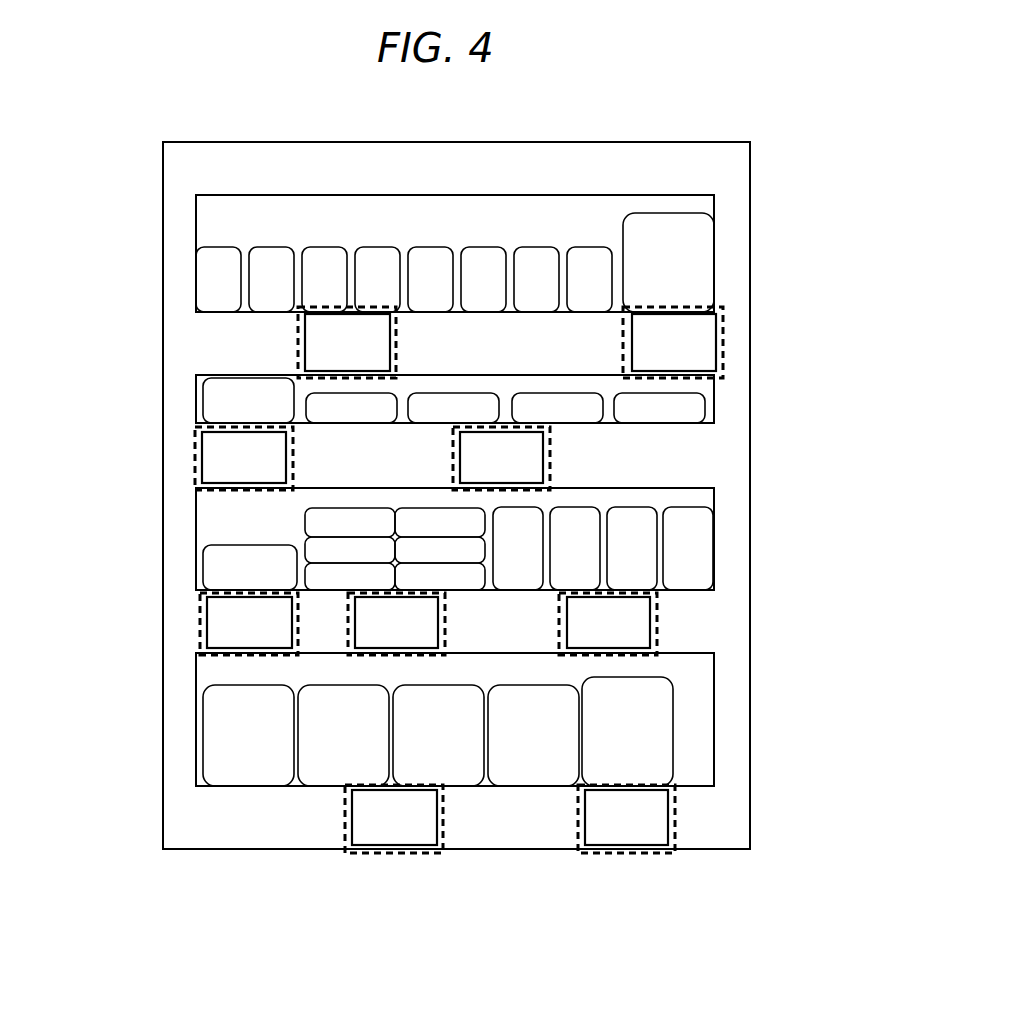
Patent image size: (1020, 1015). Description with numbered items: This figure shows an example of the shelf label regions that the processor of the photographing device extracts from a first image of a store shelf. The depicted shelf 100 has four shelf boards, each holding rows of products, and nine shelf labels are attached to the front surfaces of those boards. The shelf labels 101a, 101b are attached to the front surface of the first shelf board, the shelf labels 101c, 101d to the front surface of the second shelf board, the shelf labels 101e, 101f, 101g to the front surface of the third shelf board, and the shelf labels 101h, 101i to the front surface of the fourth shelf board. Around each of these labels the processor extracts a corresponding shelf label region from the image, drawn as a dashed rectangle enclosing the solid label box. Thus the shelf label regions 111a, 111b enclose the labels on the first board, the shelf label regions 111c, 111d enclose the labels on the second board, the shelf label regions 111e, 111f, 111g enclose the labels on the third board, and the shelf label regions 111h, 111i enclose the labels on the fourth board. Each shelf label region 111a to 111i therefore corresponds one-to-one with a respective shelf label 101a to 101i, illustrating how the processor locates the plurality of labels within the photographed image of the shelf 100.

The shelf 100 is at (373, 142).
The shelf label 101a is at (305, 350).
The shelf label 101b is at (716, 350).
The shelf label 101c is at (202, 461).
The shelf label 101d is at (543, 462).
The shelf label 101e is at (207, 618).
The shelf label 101f is at (426, 648).
The shelf label 101g is at (650, 617).
The shelf label 101h is at (370, 853).
The shelf label 101i is at (610, 853).
The shelf label region 111a is at (298, 339).
The shelf label region 111b is at (723, 320).
The shelf label region 111c is at (195, 428).
The shelf label region 111d is at (550, 430).
The shelf label region 111e is at (200, 595).
The shelf label region 111f is at (436, 655).
The shelf label region 111g is at (657, 598).
The shelf label region 111h is at (416, 853).
The shelf label region 111i is at (640, 853).